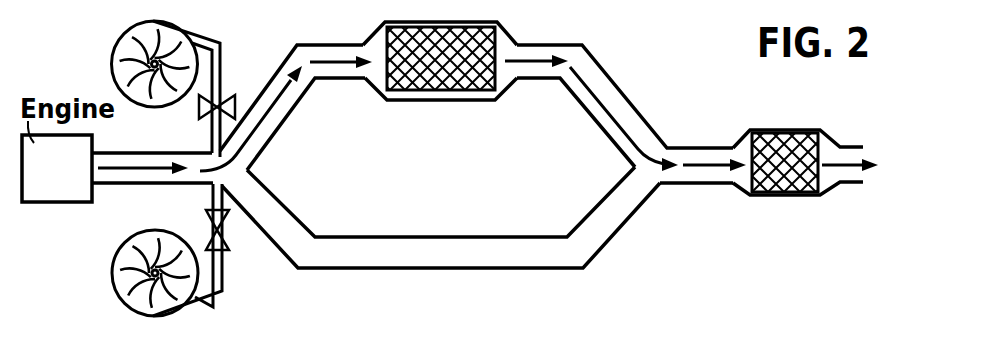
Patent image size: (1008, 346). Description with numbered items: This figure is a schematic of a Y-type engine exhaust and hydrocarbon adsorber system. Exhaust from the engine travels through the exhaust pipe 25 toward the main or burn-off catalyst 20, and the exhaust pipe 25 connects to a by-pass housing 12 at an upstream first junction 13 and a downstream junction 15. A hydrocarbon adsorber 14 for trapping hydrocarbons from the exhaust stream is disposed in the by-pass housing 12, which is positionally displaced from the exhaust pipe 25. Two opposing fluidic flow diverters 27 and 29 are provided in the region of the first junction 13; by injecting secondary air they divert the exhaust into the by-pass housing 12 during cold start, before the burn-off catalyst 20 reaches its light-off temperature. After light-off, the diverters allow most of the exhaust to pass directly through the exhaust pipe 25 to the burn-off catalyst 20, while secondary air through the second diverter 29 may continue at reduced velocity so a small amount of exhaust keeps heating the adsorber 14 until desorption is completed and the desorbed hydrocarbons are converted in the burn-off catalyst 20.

The by-pass housing 12 is at (282, 64).
The first junction 13 is at (198, 196).
The hydrocarbon adsorber 14 is at (445, 85).
The downstream junction 15 is at (687, 118).
The burn-off catalyst 20 is at (797, 185).
The exhaust pipe 25 is at (508, 234).
The flow diverter 27 is at (112, 24).
The second flow diverter 29 is at (95, 287).